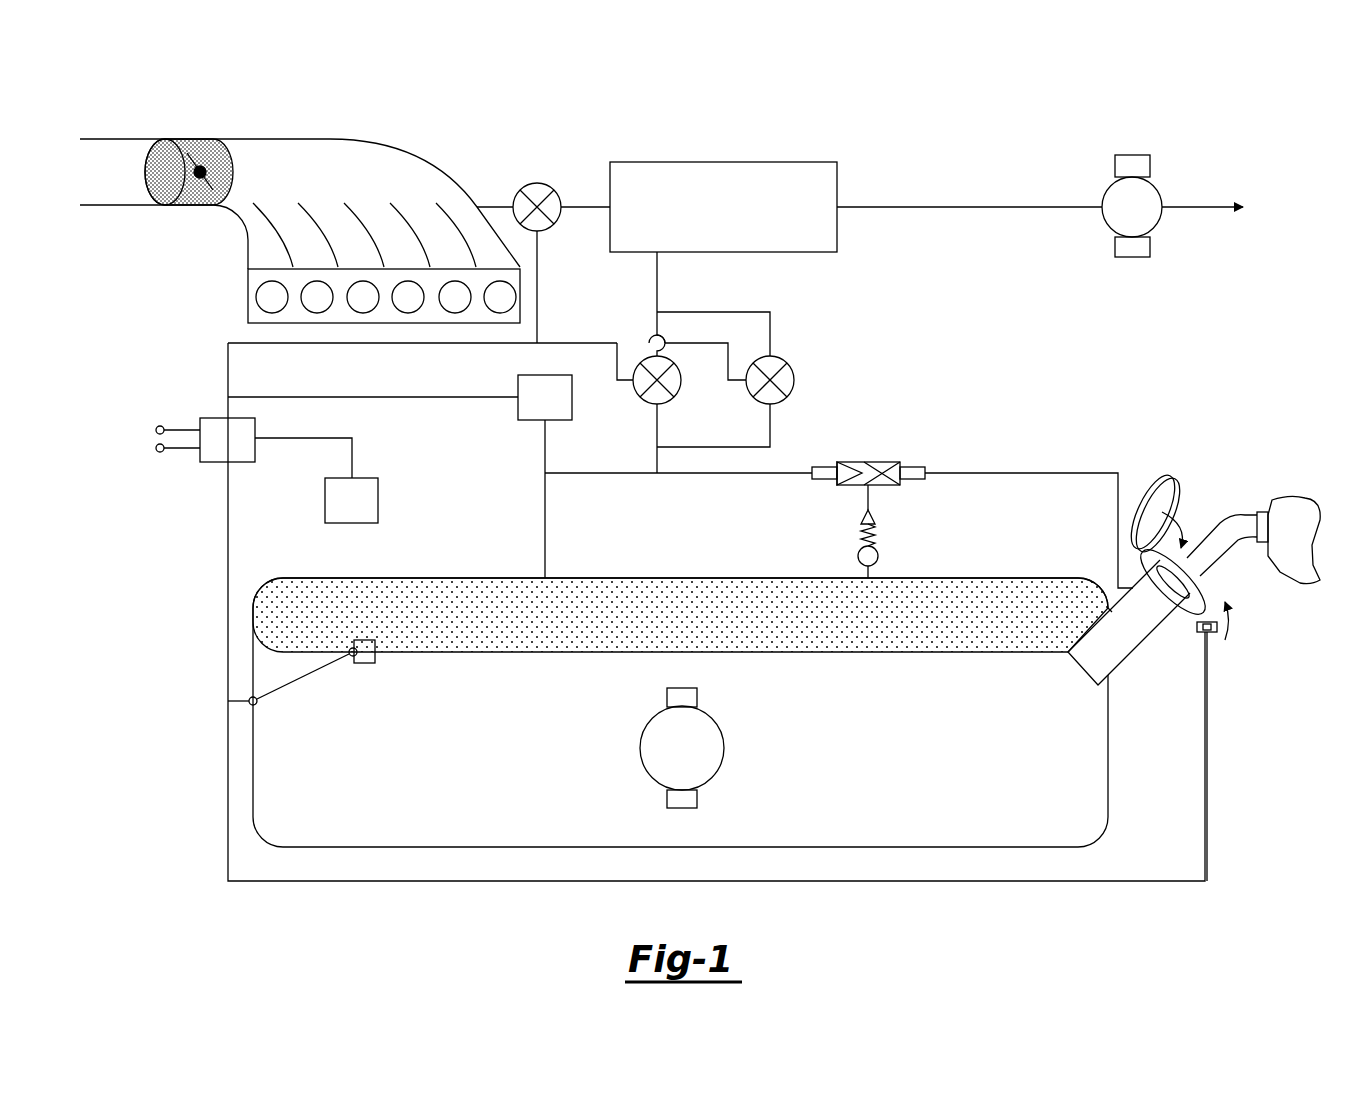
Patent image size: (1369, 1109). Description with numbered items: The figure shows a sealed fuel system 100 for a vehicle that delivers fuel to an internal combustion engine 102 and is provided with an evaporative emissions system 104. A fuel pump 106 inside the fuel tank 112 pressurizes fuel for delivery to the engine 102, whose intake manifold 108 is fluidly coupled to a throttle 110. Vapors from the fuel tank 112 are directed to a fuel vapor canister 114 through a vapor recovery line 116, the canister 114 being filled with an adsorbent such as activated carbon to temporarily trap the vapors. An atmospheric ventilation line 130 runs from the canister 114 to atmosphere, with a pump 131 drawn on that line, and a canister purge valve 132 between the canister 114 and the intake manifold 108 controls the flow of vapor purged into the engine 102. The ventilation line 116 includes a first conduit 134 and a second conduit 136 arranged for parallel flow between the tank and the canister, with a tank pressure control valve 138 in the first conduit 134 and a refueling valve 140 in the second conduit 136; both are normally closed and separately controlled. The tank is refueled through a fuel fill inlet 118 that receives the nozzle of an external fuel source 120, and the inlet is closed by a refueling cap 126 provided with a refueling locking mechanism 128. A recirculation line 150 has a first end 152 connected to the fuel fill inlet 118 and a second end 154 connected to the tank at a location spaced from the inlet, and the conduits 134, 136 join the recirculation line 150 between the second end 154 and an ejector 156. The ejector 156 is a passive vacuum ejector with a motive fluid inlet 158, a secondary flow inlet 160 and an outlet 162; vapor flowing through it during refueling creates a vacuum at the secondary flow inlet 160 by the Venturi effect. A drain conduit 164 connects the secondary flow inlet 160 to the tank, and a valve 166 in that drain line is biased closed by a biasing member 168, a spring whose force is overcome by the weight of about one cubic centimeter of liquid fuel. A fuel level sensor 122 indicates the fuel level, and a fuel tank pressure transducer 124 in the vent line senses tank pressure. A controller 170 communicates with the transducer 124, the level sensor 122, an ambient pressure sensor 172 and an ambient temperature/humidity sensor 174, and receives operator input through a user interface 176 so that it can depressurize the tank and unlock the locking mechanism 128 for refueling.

The fuel system 100 is at (162, 550).
The internal combustion engine 102 is at (248, 297).
The evaporative emissions system 104 is at (865, 283).
The fuel pump 106 is at (725, 748).
The engine intake manifold 108 is at (390, 148).
The throttle 110 is at (195, 138).
The fuel tank 112 is at (253, 797).
The fuel vapor canister 114 is at (720, 162).
The vapor recovery line 116 is at (657, 290).
The fuel fill inlet 118 is at (1130, 655).
The external fuel source 120 is at (1240, 515).
The fuel level sensor 122 is at (303, 676).
The fuel tank pressure transducer 124 is at (560, 412).
The refueling cap 126 is at (1175, 495).
The refueling locking mechanism 128 is at (1202, 632).
The atmospheric ventilation line 130 is at (968, 205).
The pump 131 is at (1158, 192).
The canister purge valve 132 is at (537, 182).
The first conduit 134 is at (660, 422).
The second conduit 136 is at (773, 422).
The tank pressure control valve 138 is at (632, 388).
The refueling valve 140 is at (795, 380).
The recirculation line 150 is at (706, 478).
The first end 152 is at (1104, 531).
The second end 154 is at (572, 514).
The ejector 156 is at (895, 458).
The motive fluid inlet 158 is at (825, 481).
The secondary flow inlet 160 is at (880, 492).
The outlet 162 is at (912, 481).
The drain conduit 164 is at (860, 500).
The valve 166 is at (880, 556).
The biasing member 168 is at (862, 540).
The controller 170 is at (243, 455).
The ambient pressure sensor 172 is at (156, 450).
The ambient temperature/humidity sensor 174 is at (156, 428).
The user interface 176 is at (367, 516).